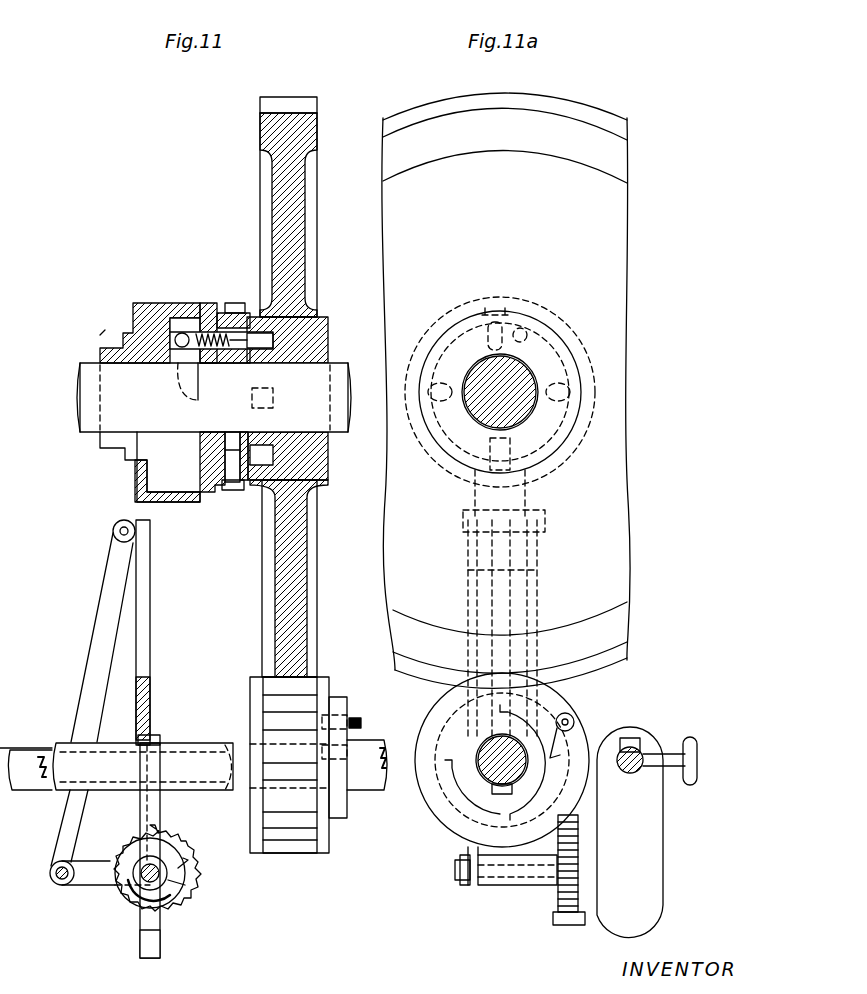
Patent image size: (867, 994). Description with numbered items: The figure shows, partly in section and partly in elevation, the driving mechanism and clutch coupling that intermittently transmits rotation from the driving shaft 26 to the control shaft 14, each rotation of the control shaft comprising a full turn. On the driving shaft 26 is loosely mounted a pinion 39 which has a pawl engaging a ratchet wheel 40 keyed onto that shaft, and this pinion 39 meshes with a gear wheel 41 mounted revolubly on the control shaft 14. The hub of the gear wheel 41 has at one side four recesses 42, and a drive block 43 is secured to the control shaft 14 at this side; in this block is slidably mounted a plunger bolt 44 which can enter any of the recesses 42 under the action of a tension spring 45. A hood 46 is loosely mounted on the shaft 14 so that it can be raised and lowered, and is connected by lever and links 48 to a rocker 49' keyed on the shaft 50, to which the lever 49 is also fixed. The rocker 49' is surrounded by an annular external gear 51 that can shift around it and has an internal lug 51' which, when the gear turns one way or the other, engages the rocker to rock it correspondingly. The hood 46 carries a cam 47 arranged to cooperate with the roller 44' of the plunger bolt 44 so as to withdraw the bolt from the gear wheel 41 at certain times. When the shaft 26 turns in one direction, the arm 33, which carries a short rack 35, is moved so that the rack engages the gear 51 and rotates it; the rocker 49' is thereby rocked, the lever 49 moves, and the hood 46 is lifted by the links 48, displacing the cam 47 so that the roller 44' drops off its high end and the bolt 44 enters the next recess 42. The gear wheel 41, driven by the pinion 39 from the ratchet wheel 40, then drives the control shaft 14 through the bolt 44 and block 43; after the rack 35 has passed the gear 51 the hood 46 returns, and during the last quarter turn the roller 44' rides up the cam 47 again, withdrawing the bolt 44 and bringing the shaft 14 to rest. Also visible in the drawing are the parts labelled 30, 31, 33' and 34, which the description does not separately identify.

In FIG. 11, the control shaft 14 is at (88, 436).
In FIG. 11, the driving shaft 26 is at (384, 740).
In FIG. 11A, the driving shaft 26 is at (488, 748).
In FIG. 11A, the pin 30 is at (638, 770).
In FIG. 11, the cylinder 31 is at (235, 790).
In FIG. 11, the arm 33 is at (171, 739).
In FIG. 11A, the arm 33 is at (646, 832).
In FIG. 11, the handle block 33' is at (166, 721).
In FIG. 11A, the handle block 33' is at (712, 760).
In FIG. 11, the connecting piece 34 is at (180, 745).
In FIG. 11A, the connecting piece 34 is at (640, 740).
In FIG. 11A, the rack 35 is at (555, 928).
In FIG. 11, the pinion 39 is at (280, 846).
In FIG. 11, the ratchet wheel 40 is at (340, 818).
In FIG. 11A, the ratchet wheel 40 is at (470, 785).
In FIG. 11, the gear wheel 41 is at (310, 128).
In FIG. 11A, the gear wheel 41 is at (620, 105).
In FIG. 11, the recesses 42 is at (260, 462).
In FIG. 11A, the recesses 42 is at (562, 392).
In FIG. 11, the drive block 43 is at (212, 300).
In FIG. 11, the plunger bolt 44 is at (309, 397).
In FIG. 11A, the plunger bolt 44 is at (589, 296).
In FIG. 11, the roller 44' is at (200, 321).
In FIG. 11A, the roller 44' is at (519, 304).
In FIG. 11, the tension spring 45 is at (232, 312).
In FIG. 11, the hood 46 is at (148, 300).
In FIG. 11, the cam 47 is at (180, 385).
In FIG. 11A, the cam 47 is at (440, 340).
In FIG. 11, the links 48 is at (88, 685).
In FIG. 11A, the links 48 is at (540, 572).
In FIG. 11, the lever 49 is at (100, 891).
In FIG. 11A, the lever 49 is at (509, 884).
In FIG. 11, the rocker 49' is at (209, 889).
In FIG. 11A, the shaft 50 is at (458, 882).
In FIG. 11, the annular external gear 51 is at (169, 875).
In FIG. 11A, the annular external gear 51 is at (583, 863).
In FIG. 11, the internal lug 51' is at (209, 852).